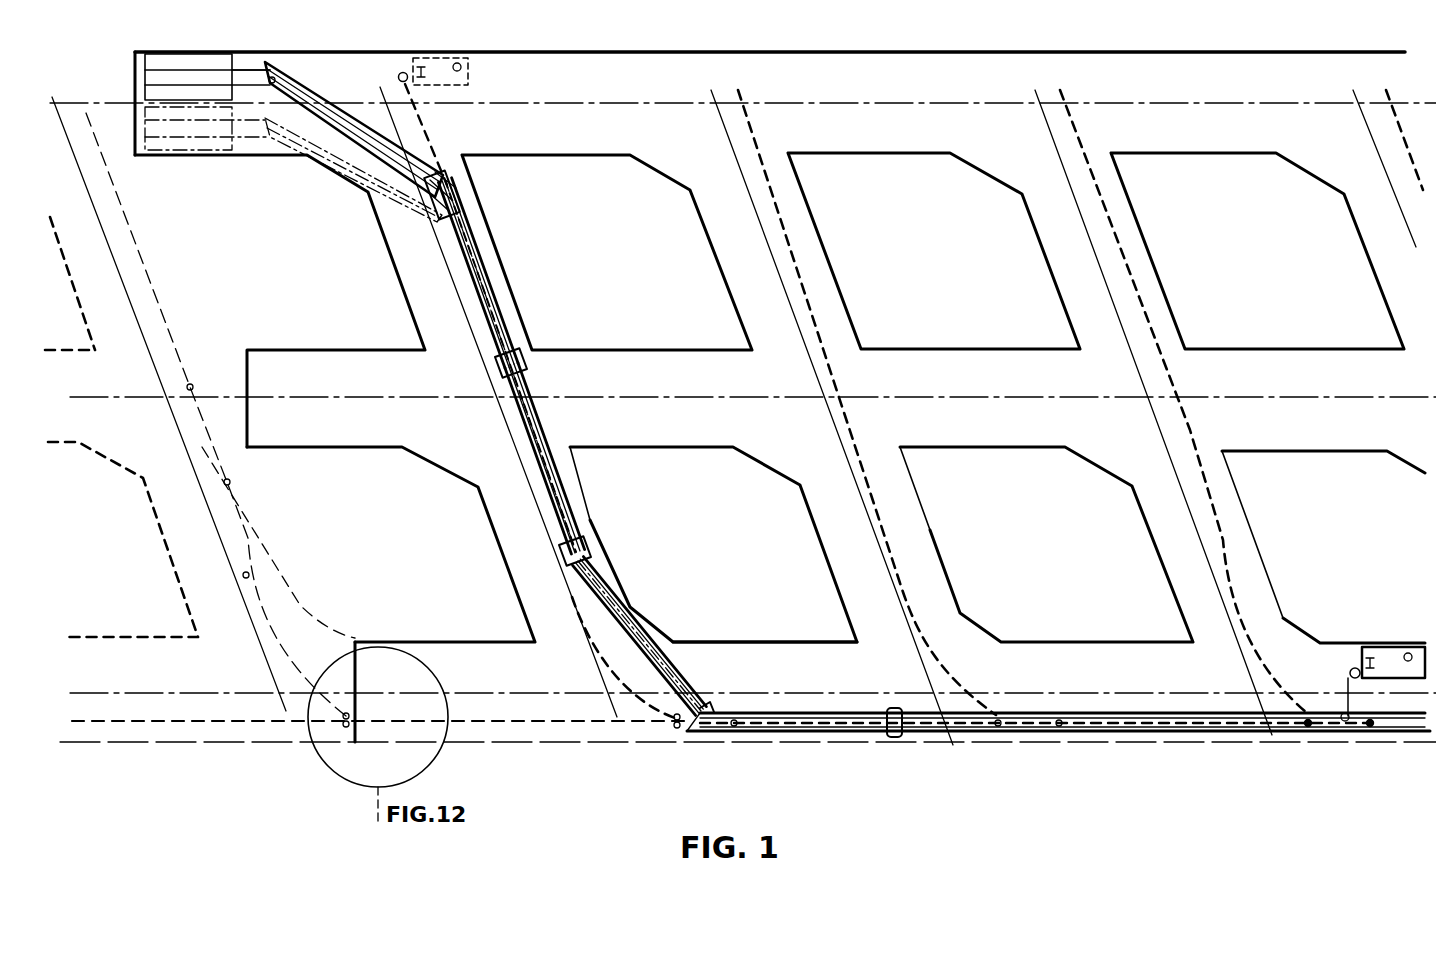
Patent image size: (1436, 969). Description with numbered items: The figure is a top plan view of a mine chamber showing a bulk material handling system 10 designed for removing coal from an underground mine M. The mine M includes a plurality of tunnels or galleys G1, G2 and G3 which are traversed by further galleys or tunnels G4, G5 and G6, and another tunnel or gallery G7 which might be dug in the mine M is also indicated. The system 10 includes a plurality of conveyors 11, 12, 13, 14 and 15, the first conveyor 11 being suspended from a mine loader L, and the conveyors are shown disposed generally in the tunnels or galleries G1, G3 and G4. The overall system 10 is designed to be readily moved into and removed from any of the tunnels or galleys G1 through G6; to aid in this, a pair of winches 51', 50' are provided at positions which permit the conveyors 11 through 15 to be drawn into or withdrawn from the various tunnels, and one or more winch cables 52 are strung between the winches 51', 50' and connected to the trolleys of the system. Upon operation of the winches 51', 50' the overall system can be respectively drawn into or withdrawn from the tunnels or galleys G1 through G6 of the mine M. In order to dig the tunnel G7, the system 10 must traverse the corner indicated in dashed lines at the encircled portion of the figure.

The mine loader L is at (165, 63).
The underground mine M is at (916, 86).
The winch 51' is at (465, 121).
The winch cable 52 is at (433, 146).
The conveyor 11 is at (348, 125).
The conveyor 12 is at (503, 287).
The conveyor 13 is at (570, 498).
The bulk material handling system 10 is at (655, 635).
The conveyor 14 is at (692, 689).
The conveyor 15 is at (822, 708).
The winch 50' is at (1383, 659).
The tunnel or galley G1 is at (742, 638).
The tunnel or galley G2 is at (670, 450).
The tunnel or galley G3 is at (535, 153).
The tunnel or galley G4 is at (497, 545).
The tunnel or galley G5 is at (934, 550).
The tunnel or galley G6 is at (1240, 510).
The tunnel or gallery G7 is at (293, 570).